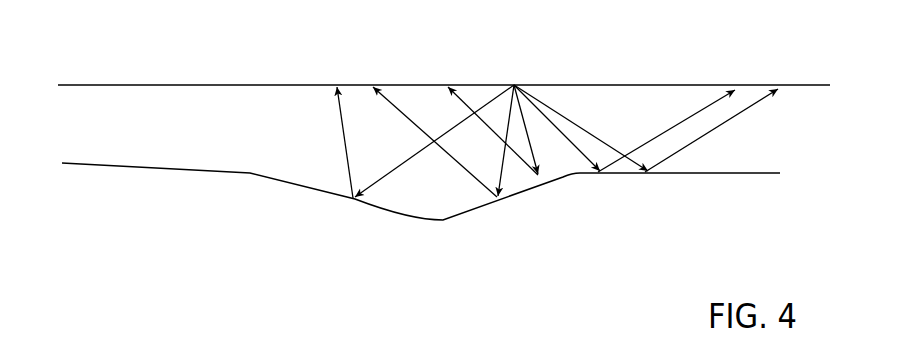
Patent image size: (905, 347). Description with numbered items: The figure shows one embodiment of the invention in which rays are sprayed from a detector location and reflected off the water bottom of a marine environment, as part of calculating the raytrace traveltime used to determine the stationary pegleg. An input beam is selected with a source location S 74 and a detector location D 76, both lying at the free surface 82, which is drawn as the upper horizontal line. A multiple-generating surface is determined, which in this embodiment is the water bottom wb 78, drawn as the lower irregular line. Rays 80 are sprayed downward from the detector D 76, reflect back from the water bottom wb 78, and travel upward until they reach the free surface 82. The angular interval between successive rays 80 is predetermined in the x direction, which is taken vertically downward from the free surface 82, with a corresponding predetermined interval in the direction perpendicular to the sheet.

The source location 74 is at (130, 62).
The detector location 76 is at (525, 56).
The water bottom 78 is at (145, 167).
The rays 80 is at (417, 157).
The free surface 82 is at (763, 78).